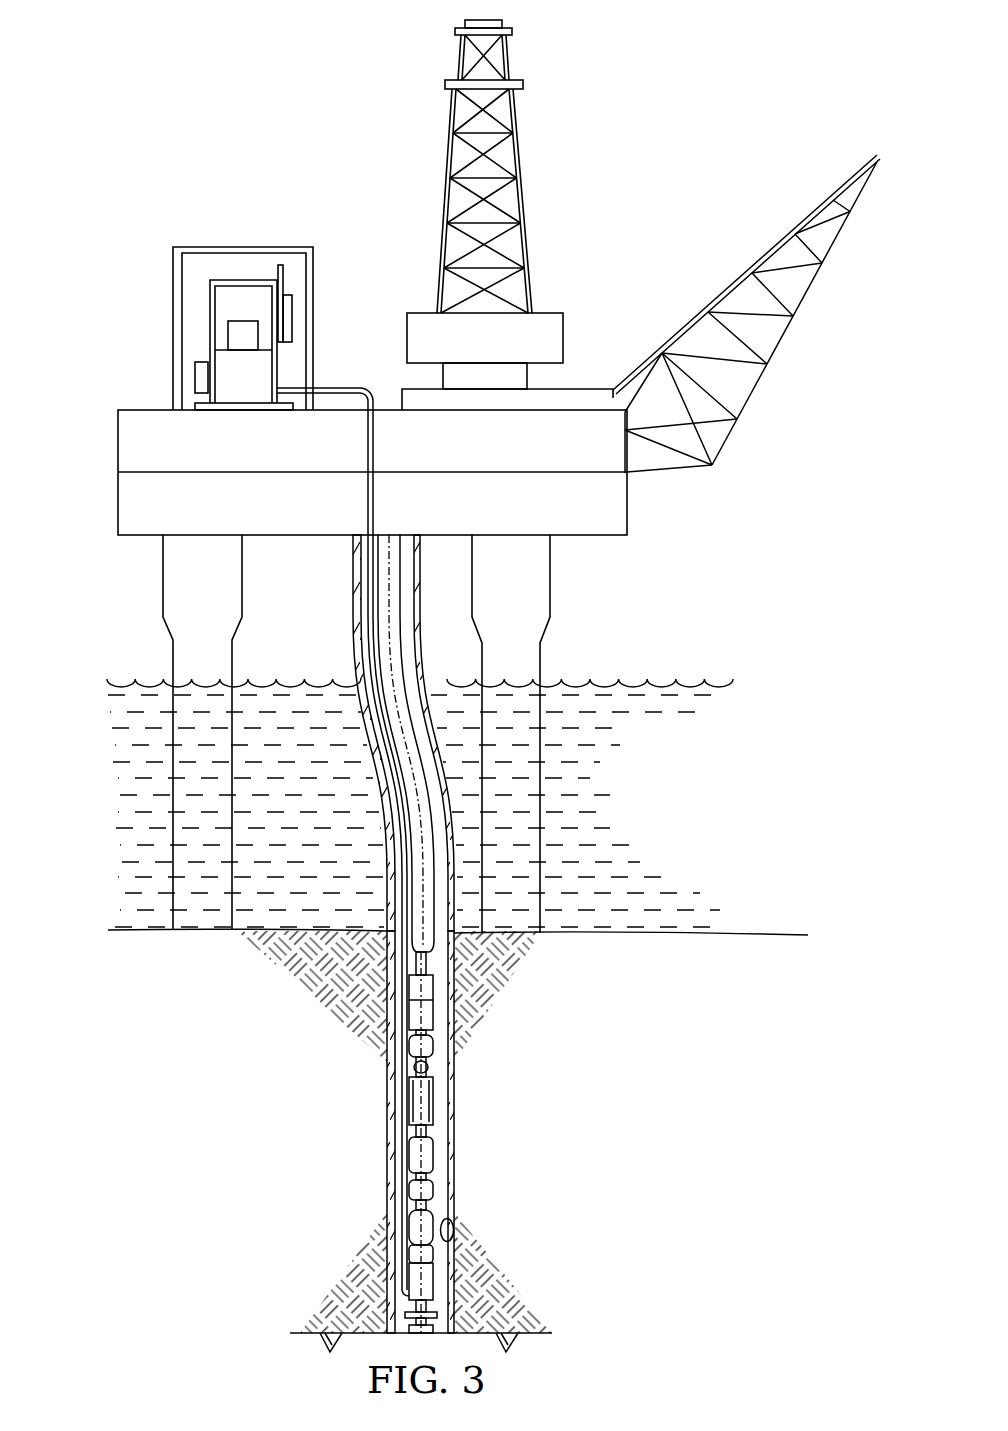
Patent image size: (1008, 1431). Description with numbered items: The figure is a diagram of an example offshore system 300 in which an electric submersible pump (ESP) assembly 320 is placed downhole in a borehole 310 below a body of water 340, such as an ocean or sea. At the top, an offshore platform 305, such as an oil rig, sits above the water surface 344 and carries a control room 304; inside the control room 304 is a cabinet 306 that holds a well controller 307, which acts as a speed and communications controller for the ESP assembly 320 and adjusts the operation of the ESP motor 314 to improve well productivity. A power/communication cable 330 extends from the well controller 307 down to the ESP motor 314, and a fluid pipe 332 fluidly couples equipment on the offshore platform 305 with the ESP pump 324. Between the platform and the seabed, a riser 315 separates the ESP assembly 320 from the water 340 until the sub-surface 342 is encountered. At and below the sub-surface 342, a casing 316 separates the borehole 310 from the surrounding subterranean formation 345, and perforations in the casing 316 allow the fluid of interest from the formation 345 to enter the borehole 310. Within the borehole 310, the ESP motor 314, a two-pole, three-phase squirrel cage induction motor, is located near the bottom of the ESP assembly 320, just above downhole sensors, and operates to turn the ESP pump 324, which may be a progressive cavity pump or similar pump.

The offshore system 300 is at (250, 103).
The control room 304 is at (243, 244).
The offshore platform 305 is at (118, 435).
The cabinet 306 is at (208, 312).
The well controller 307 is at (228, 338).
The borehole 310 is at (442, 1182).
The ESP motor 314 is at (436, 1293).
The riser 315 is at (387, 861).
The casing 316 is at (455, 1226).
The ESP assembly 320 is at (462, 1112).
The ESP pump 324 is at (436, 1064).
The power/communication cable 330 is at (369, 506).
The fluid pipe 332 is at (366, 621).
The body of water 340 is at (645, 793).
The sub-surface 342 is at (762, 933).
The water surface 344 is at (662, 685).
The subterranean formation 345 is at (300, 1044).